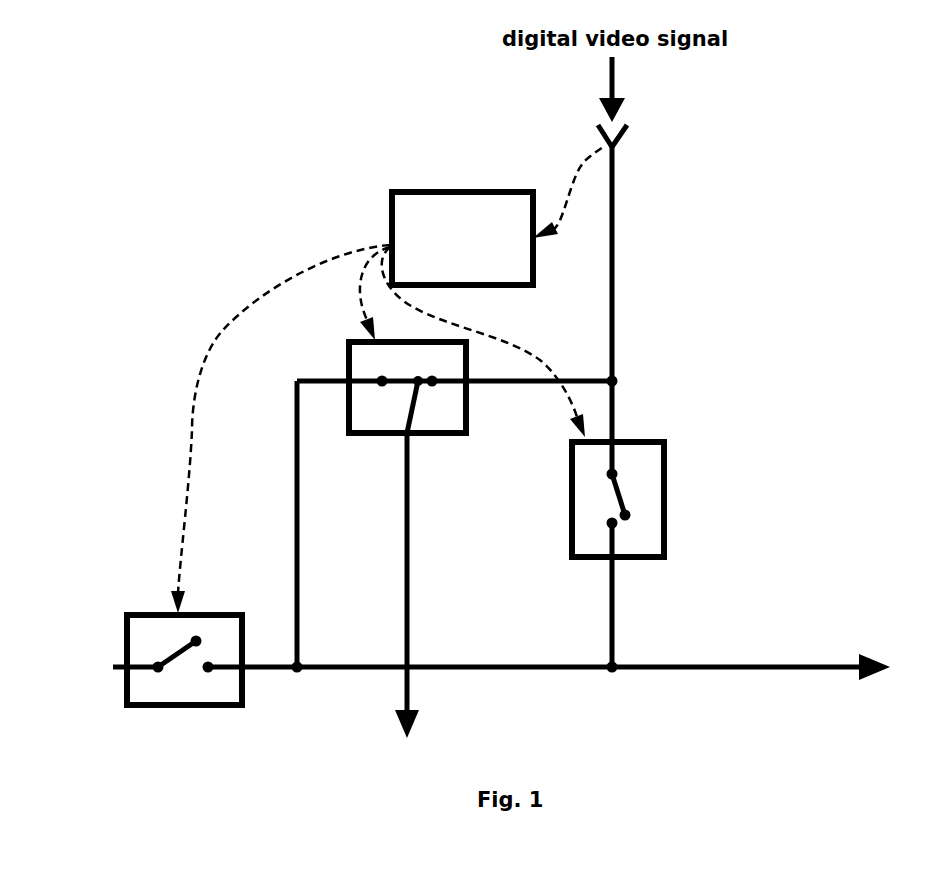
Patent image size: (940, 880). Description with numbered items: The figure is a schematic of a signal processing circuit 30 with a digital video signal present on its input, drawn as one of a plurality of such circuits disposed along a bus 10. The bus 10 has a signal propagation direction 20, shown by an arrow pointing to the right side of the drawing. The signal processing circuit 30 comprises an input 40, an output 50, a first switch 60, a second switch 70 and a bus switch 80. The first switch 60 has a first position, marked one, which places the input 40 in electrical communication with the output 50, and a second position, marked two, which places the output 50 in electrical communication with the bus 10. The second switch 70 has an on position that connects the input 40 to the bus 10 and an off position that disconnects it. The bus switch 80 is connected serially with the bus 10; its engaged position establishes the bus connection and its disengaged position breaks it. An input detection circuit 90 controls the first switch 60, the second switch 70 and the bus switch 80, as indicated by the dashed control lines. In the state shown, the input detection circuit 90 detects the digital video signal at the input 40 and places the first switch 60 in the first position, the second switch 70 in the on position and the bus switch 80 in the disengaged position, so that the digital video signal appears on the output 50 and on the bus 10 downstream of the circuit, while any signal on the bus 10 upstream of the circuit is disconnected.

The bus 10 is at (680, 671).
The signal propagation direction 20 is at (873, 680).
The signal processing circuit 30 is at (126, 401).
The input 40 is at (617, 120).
The output 50 is at (420, 728).
The first switch 60 is at (338, 365).
The second switch 70 is at (664, 483).
The bus switch 80 is at (150, 610).
The input detection circuit 90 is at (455, 187).